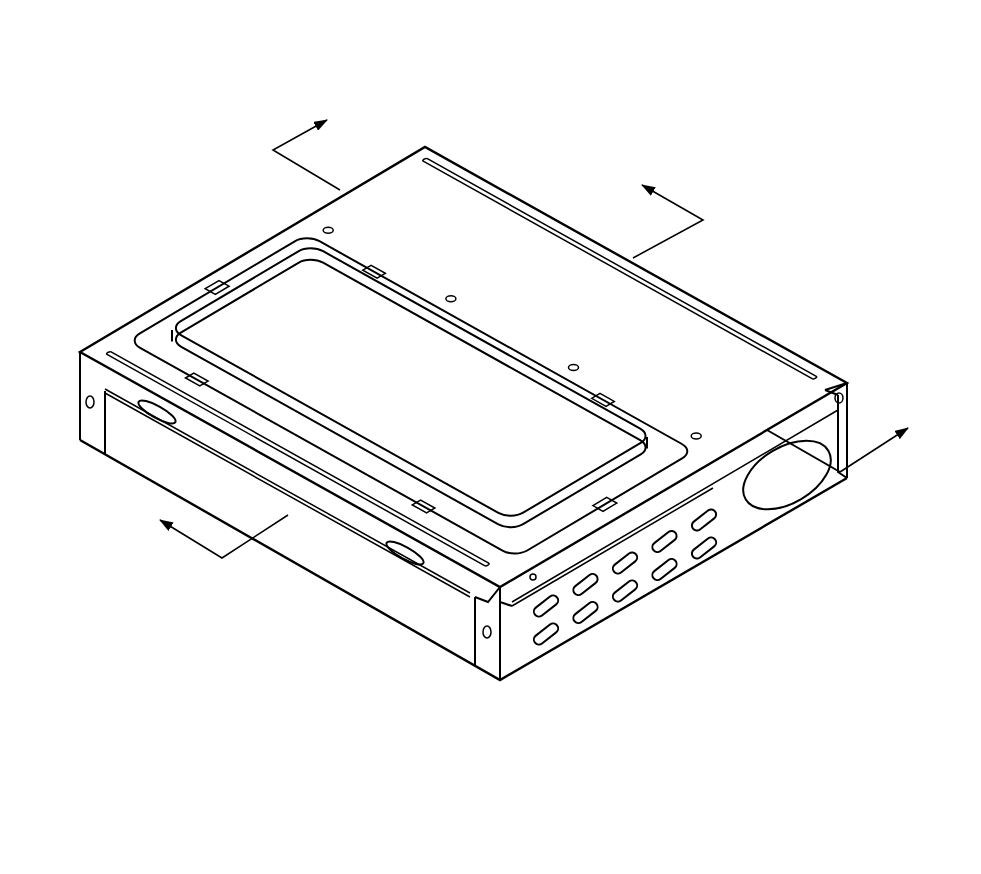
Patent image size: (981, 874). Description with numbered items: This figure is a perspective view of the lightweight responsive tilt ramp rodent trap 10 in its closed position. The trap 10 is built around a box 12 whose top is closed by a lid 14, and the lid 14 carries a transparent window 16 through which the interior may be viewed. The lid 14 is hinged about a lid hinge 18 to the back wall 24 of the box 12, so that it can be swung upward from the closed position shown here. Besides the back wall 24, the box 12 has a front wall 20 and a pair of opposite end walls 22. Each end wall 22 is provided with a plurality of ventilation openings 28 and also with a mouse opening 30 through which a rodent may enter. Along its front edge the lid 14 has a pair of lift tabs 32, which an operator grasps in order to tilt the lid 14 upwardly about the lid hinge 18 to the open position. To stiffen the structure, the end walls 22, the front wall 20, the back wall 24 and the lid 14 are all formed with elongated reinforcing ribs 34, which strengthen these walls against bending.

The trap 10 is at (412, 82).
The box 12 is at (250, 247).
The lid 14 is at (502, 227).
The transparent window 16 is at (404, 397).
The lid hinge 18 is at (851, 385).
The front wall 20 is at (322, 563).
The end walls 22 is at (78, 393).
The back wall 24 is at (847, 424).
The ventilation openings 28 is at (692, 532).
The mouse opening 30 is at (784, 487).
The lift tabs 32 is at (163, 418).
The reinforcing ribs 34 is at (105, 343).